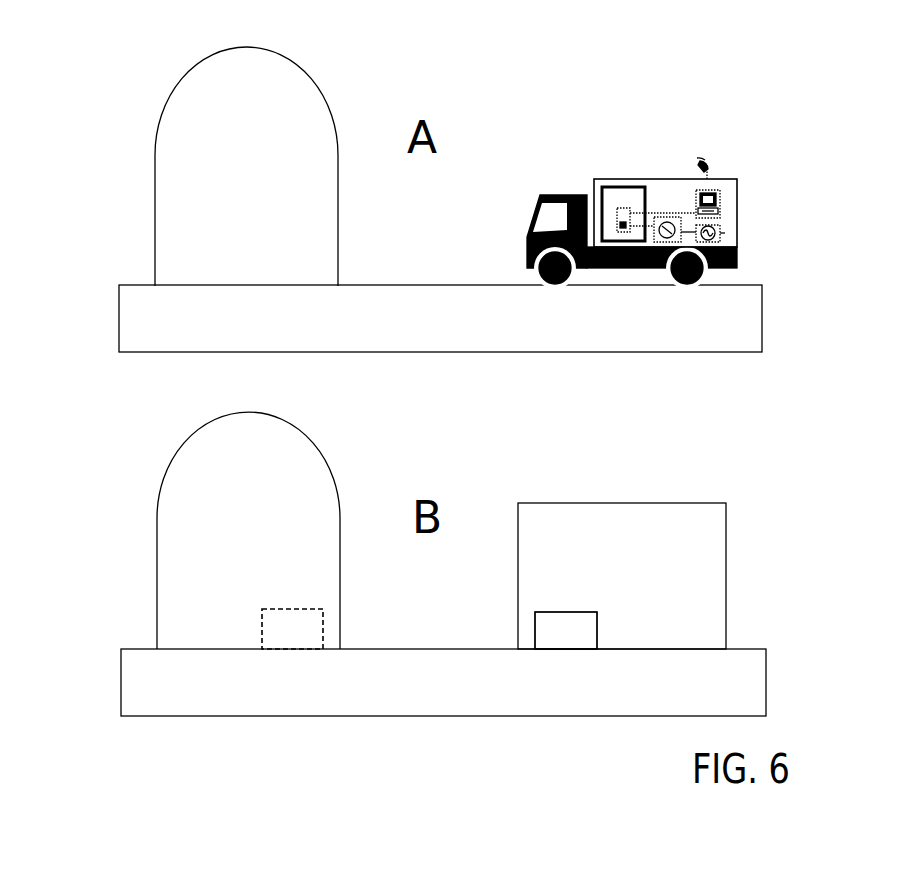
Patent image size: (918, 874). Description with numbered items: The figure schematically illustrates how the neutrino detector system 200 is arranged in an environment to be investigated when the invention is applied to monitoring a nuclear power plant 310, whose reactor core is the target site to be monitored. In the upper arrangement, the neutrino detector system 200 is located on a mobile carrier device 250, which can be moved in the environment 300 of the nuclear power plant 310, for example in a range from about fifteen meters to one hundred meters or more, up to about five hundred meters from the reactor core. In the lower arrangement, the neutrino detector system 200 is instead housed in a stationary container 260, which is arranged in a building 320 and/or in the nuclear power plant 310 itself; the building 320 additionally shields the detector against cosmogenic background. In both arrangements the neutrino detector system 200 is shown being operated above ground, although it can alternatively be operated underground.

In FIG. 6A, the neutrino detector system 200 is at (781, 115).
In FIG. 6B, the neutrino detector system 200 is at (588, 596).
In FIG. 6A, the mobile carrier device 250 is at (528, 248).
In FIG. 6B, the stationary container 260 is at (272, 633).
In FIG. 6A, the environment 300 is at (125, 327).
In FIG. 6B, the environment 300 is at (129, 680).
In FIG. 6A, the nuclear power plant 310 is at (183, 140).
In FIG. 6B, the nuclear power plant 310 is at (172, 532).
In FIG. 6B, the building 320 is at (567, 515).